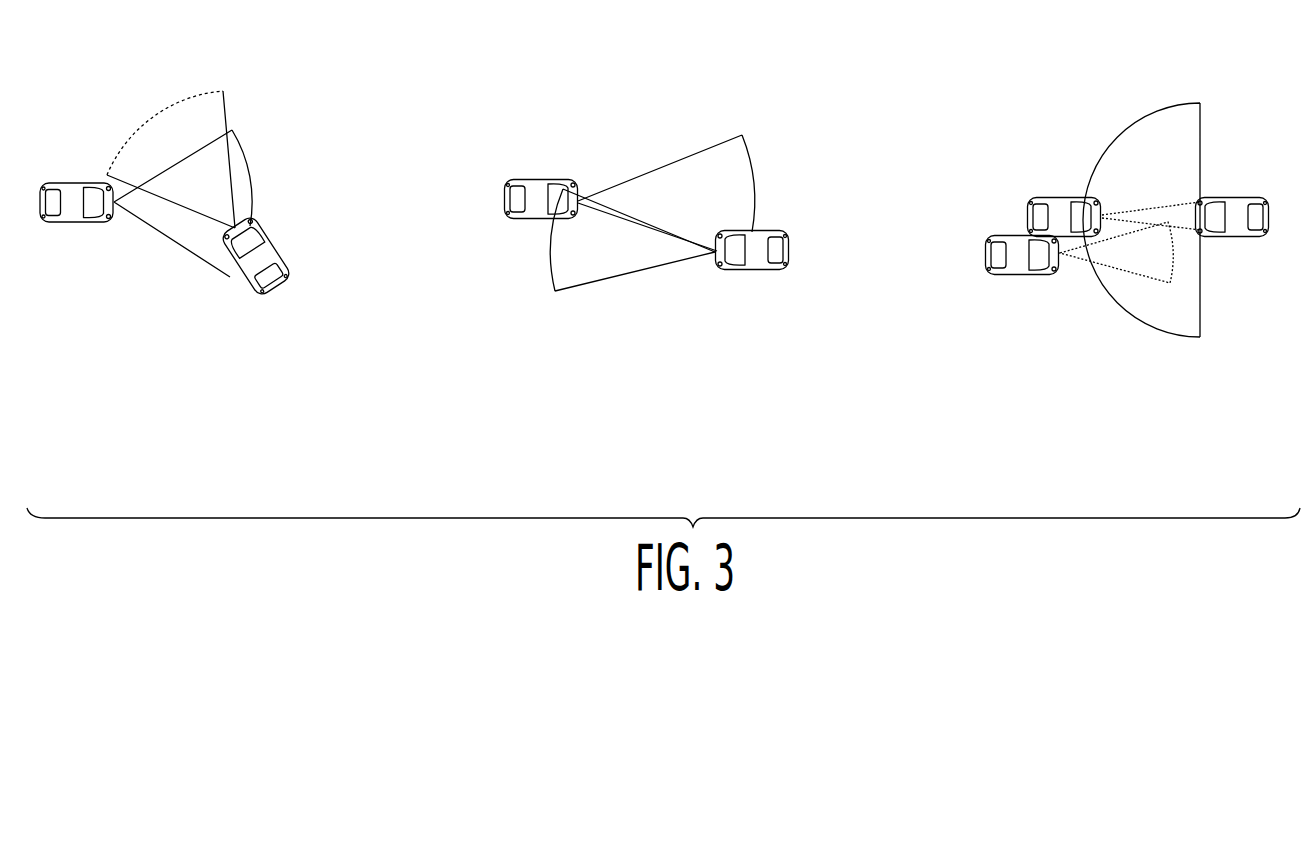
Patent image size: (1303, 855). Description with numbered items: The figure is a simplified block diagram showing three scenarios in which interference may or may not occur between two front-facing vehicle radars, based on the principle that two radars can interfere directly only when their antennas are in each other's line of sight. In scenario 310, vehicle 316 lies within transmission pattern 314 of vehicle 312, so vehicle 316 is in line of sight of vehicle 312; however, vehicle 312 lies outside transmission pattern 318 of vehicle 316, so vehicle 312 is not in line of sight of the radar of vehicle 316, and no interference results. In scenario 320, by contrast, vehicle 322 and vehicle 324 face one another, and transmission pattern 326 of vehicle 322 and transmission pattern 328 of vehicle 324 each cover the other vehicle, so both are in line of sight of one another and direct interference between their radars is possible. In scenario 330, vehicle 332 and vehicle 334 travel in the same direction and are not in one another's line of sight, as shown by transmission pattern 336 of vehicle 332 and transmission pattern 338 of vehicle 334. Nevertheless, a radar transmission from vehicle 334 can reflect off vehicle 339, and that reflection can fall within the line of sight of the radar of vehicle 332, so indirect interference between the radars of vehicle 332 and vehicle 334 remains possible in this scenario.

The scenario 310 is at (206, 187).
The vehicle 312 is at (70, 223).
The transmission pattern 314 is at (245, 153).
The vehicle 316 is at (283, 267).
The transmission pattern 318 is at (185, 98).
The scenario 320 is at (673, 253).
The vehicle 322 is at (535, 180).
The vehicle 324 is at (757, 270).
The transmission pattern 326 is at (753, 168).
The transmission pattern 328 is at (618, 277).
The scenario 330 is at (1127, 275).
The vehicle 332 is at (1032, 198).
The vehicle 334 is at (1020, 277).
The transmission pattern 336 is at (1187, 205).
The transmission pattern 338 is at (1133, 277).
The vehicle 339 is at (1227, 237).